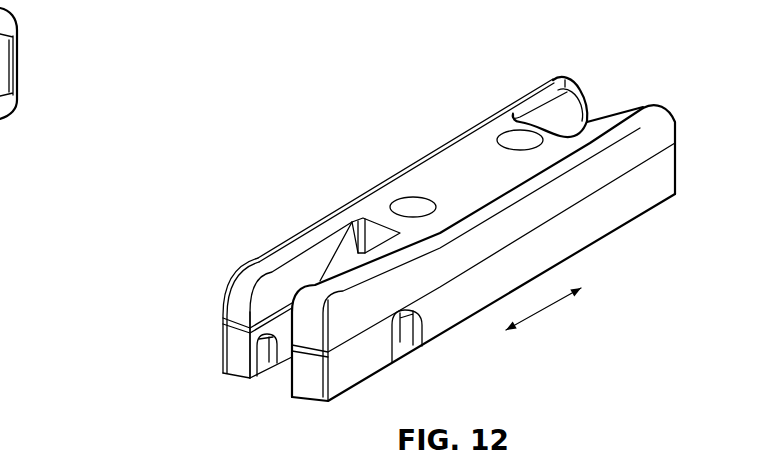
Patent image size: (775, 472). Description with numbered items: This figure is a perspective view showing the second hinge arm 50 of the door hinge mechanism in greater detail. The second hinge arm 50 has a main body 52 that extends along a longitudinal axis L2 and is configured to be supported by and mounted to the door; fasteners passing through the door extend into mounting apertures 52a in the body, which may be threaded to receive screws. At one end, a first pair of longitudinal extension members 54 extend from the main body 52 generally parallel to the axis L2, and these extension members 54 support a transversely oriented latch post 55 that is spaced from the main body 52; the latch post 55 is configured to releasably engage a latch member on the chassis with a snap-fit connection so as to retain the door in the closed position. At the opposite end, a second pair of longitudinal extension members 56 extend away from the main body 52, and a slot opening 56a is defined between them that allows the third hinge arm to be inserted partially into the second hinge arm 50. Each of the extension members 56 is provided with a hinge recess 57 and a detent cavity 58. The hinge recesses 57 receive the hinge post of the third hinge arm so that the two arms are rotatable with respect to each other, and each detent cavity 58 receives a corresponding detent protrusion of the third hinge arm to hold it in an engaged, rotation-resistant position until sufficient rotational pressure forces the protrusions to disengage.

The second hinge arm 50 is at (465, 230).
The main body 52 is at (463, 148).
The mounting apertures 52a is at (410, 205).
The first pair of longitudinal extension members 54 is at (567, 86).
The latch post 55 is at (594, 122).
The second pair of longitudinal extension members 56 is at (281, 258).
The slot opening 56a is at (333, 247).
The hinge recess 57 is at (413, 337).
The detent cavity 58 is at (263, 357).
The longitudinal axis L2 is at (541, 310).